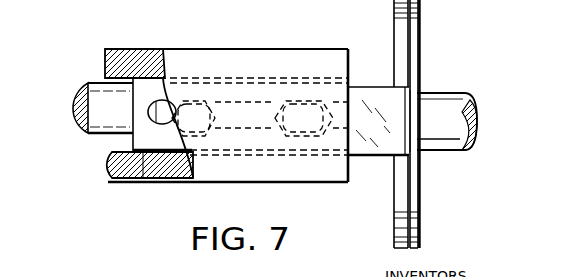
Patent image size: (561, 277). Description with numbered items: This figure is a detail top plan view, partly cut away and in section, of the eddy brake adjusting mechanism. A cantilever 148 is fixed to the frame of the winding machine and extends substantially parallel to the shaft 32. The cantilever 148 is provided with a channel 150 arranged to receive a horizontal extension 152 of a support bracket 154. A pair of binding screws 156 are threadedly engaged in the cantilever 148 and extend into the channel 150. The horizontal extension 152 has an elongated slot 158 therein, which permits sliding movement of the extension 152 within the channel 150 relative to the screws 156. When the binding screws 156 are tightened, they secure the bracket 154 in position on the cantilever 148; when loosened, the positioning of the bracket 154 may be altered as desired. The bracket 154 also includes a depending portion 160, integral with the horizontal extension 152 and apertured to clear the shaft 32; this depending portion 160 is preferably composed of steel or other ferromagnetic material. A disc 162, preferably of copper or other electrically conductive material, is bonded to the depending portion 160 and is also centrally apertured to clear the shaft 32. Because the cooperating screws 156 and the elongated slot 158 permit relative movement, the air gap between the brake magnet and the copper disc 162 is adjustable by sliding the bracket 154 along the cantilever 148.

The shaft 32 is at (433, 118).
The cantilever 148 is at (162, 183).
The channel 150 is at (193, 63).
The horizontal extension 152 is at (147, 90).
The support bracket 154 is at (398, 100).
The binding screws 156 is at (172, 110).
The elongated slot 158 is at (152, 122).
The depending portion 160 is at (402, 28).
The disc 162 is at (413, 63).